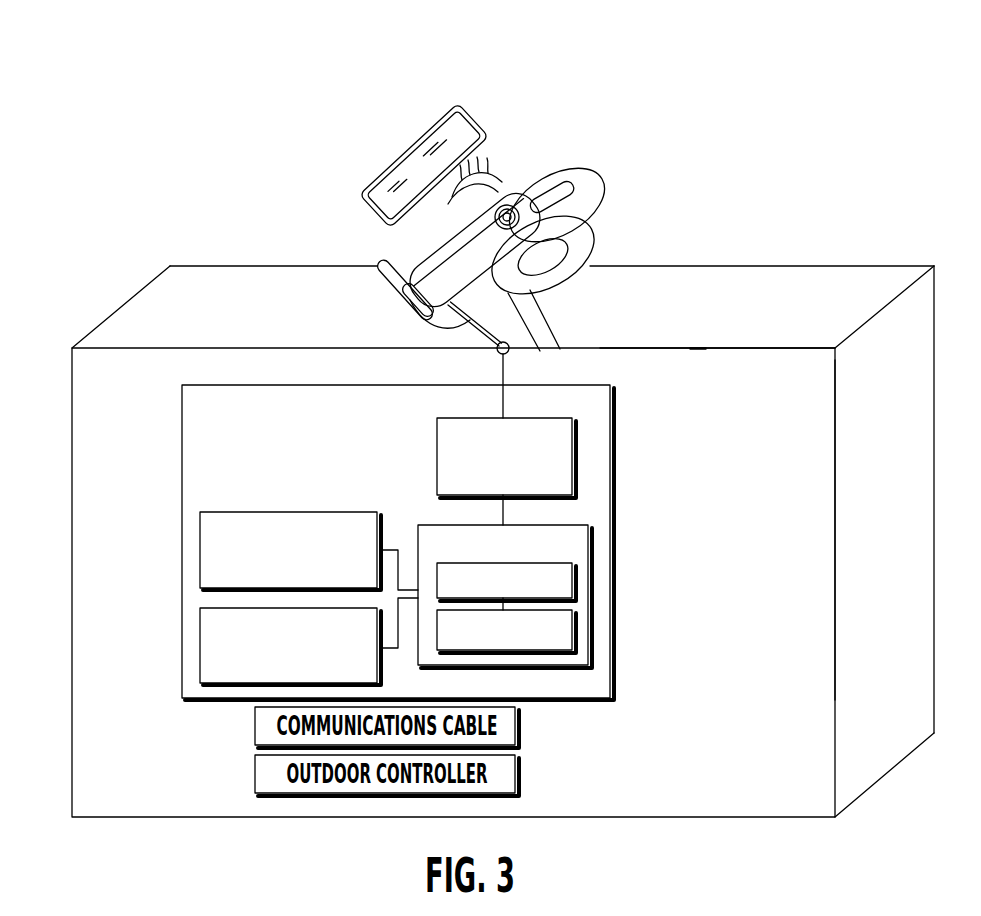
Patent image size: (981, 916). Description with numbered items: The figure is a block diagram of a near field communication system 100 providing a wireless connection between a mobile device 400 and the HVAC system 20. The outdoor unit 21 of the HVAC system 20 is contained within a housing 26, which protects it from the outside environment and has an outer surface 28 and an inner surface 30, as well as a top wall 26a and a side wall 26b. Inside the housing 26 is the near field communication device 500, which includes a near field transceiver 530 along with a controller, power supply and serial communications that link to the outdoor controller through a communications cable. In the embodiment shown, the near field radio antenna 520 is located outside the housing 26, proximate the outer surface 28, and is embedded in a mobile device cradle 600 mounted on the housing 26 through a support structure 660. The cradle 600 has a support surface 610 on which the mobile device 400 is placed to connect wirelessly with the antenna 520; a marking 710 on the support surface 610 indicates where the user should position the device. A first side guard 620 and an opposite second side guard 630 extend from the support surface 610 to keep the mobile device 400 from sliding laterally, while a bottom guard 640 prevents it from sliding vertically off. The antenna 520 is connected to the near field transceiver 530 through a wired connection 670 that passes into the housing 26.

The near field communication system 100 is at (60, 85).
The HVAC system 20 is at (58, 216).
The outdoor unit 21 is at (66, 329).
The housing 26 is at (794, 348).
The top wall 26a is at (738, 348).
The side wall 26b is at (838, 384).
The outer surface 28 is at (698, 346).
The inner surface 30 is at (698, 354).
The mobile device 400 is at (363, 194).
The near field communication device 500 is at (393, 527).
The near field radio antenna 520 is at (510, 204).
The near field transceiver 530 is at (576, 460).
The mobile device cradle 600 is at (593, 223).
The support surface 610 is at (433, 247).
The first side guard 620 is at (593, 232).
The second side guard 630 is at (492, 183).
The bottom guard 640 is at (387, 288).
The support structure 660 is at (548, 331).
The wired connection 670 is at (497, 345).
The marking 710 is at (547, 193).